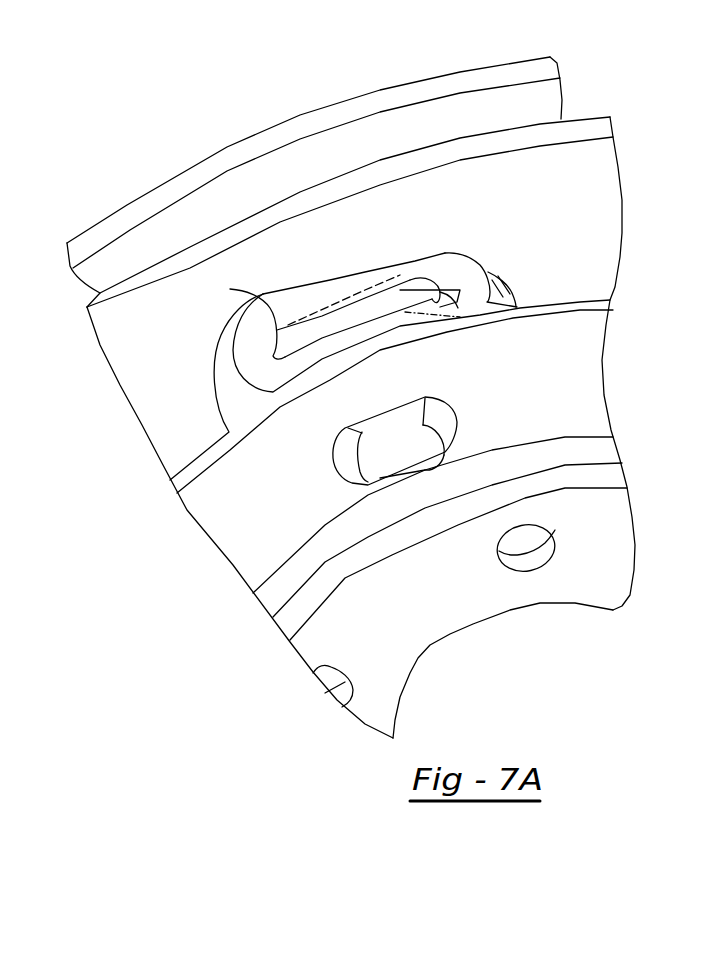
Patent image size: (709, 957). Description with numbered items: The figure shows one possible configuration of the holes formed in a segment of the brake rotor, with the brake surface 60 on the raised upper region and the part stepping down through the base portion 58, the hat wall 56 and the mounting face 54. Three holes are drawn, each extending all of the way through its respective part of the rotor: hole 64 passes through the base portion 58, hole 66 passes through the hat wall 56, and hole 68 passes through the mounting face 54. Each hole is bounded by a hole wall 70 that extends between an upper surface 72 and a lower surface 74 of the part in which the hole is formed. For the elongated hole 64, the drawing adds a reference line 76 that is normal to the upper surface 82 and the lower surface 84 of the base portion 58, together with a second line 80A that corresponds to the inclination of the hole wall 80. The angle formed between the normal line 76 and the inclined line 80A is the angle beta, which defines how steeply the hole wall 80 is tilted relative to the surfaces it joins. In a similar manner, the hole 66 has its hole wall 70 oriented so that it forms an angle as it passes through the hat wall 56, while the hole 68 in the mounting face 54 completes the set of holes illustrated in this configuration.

The mounting face 54 is at (403, 650).
The hat wall 56 is at (560, 360).
The base portion 58 is at (580, 245).
The brake surface 60 is at (150, 352).
The hole 64 is at (377, 308).
The hole 66 is at (380, 457).
The hole 68 is at (525, 555).
The hole wall 70 is at (442, 418).
The upper surface 72 is at (445, 403).
The lower surface 74 is at (423, 440).
The line 76 is at (438, 300).
The hole wall 80 is at (277, 380).
The line 80A is at (413, 290).
The upper surface 82 is at (240, 385).
The lower surface 84 is at (232, 289).